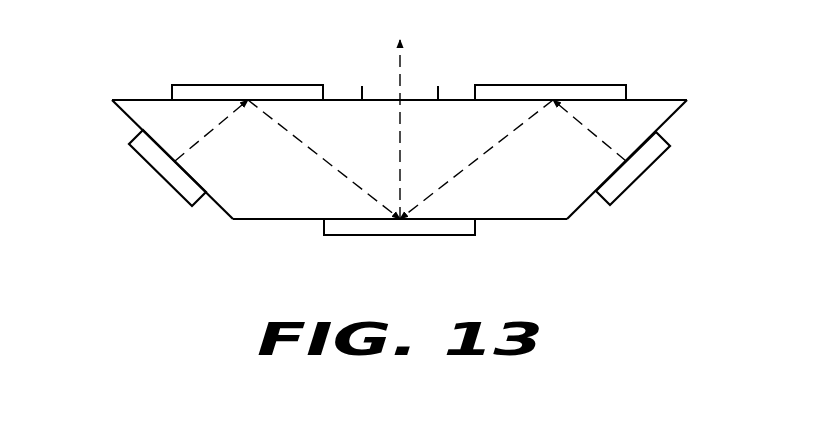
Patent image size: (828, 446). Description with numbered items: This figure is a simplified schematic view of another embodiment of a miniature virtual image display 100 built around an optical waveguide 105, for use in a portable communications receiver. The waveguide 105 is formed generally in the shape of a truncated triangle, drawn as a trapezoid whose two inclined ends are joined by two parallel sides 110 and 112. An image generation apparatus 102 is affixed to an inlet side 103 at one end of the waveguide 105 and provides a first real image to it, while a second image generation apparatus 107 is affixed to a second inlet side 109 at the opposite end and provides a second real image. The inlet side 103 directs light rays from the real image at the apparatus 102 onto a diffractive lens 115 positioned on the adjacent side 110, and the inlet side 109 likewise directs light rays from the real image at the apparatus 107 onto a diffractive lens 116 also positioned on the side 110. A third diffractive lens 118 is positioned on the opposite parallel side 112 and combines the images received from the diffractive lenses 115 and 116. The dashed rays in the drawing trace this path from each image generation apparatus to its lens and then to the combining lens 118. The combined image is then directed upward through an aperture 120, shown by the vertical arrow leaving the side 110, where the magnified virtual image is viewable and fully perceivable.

The miniature virtual image display 100 is at (399, 178).
The image generation apparatus 102 is at (159, 176).
The inlet side 103 is at (124, 111).
The optical waveguide 105 is at (458, 99).
The second image generation apparatus 107 is at (643, 173).
The second inlet side 109 is at (676, 109).
The side 110 is at (343, 99).
The side 112 is at (285, 221).
The diffractive lens 115 is at (228, 84).
The diffractive lens 116 is at (578, 83).
The third diffractive lens 118 is at (380, 237).
The aperture 120 is at (424, 69).